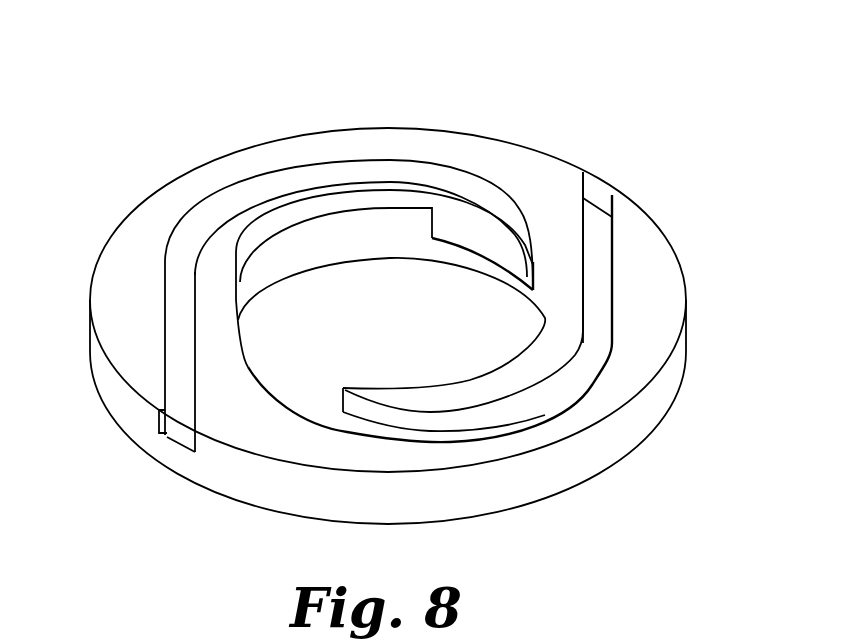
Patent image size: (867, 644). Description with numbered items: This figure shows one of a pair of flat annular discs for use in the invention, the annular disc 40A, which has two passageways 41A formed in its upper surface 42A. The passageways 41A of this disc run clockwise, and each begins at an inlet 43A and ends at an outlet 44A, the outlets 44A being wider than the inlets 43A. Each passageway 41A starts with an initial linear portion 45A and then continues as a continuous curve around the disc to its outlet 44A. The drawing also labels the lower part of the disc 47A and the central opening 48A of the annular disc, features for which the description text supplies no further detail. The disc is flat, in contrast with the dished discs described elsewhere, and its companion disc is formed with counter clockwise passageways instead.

The annular disc 40A is at (352, 116).
The passageway 41A is at (255, 207).
The upper surface 42A is at (126, 312).
The inlet 43A is at (598, 198).
The outlet 44A is at (473, 241).
The initial linear portion 45A is at (597, 270).
The bottom of disc 47A is at (488, 497).
The central opening 48A is at (333, 252).